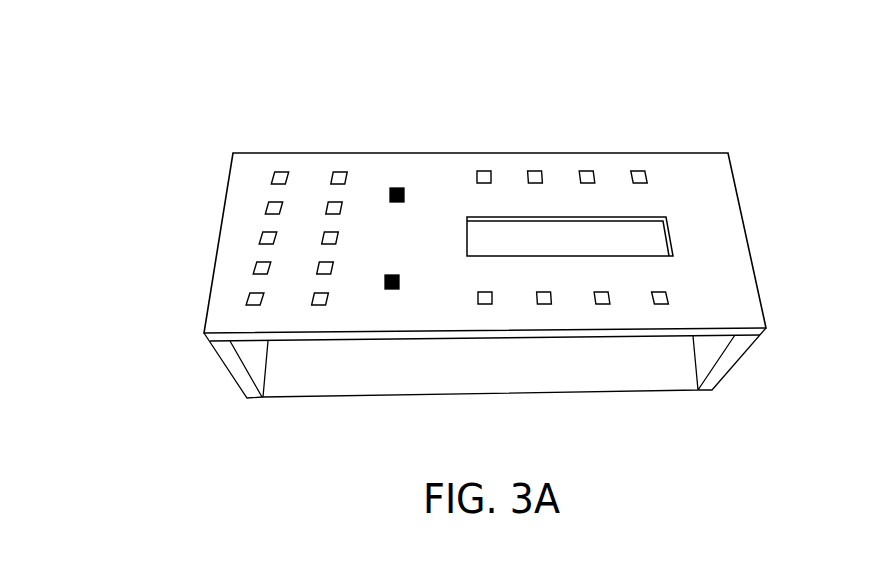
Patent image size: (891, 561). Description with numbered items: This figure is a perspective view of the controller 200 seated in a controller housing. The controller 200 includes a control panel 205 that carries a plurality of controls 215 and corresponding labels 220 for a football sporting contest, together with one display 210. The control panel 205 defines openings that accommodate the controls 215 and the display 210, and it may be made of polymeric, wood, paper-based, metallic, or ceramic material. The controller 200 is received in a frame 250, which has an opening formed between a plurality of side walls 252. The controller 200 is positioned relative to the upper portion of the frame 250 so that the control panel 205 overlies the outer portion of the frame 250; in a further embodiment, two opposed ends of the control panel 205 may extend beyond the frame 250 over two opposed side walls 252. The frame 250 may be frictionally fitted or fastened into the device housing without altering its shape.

The controller 200 is at (492, 296).
The control panel 205 is at (215, 313).
The display 210 is at (656, 236).
The controls 215 is at (278, 169).
The labels 220 is at (296, 173).
The frame 250 is at (777, 270).
The side walls 252 is at (213, 215).